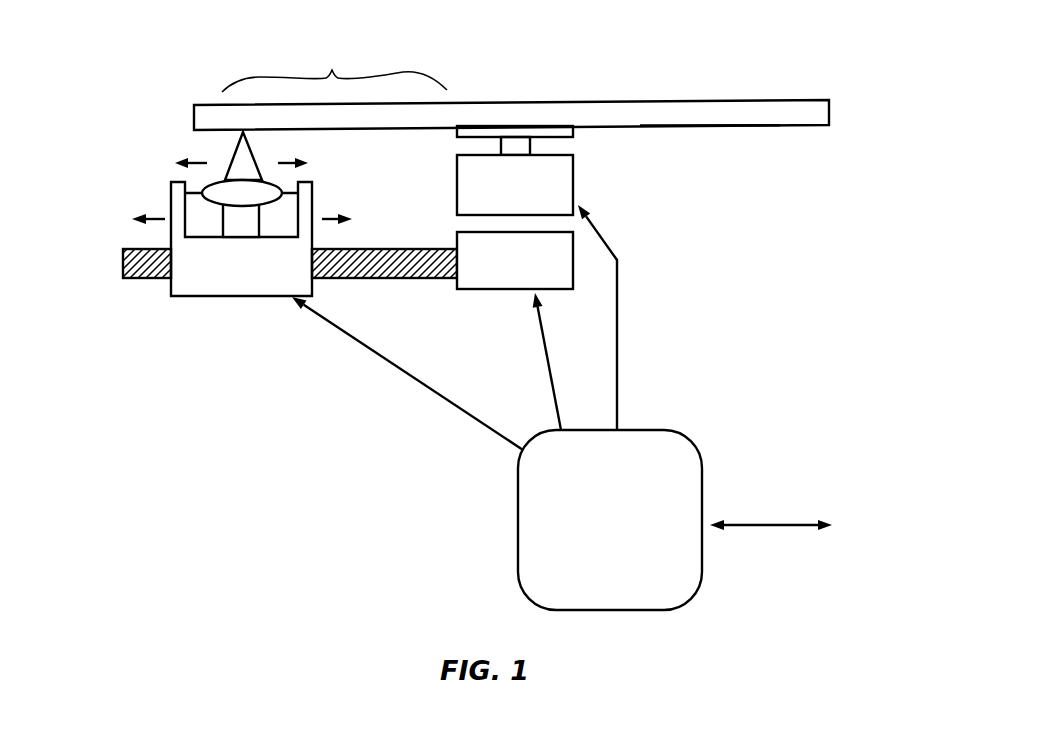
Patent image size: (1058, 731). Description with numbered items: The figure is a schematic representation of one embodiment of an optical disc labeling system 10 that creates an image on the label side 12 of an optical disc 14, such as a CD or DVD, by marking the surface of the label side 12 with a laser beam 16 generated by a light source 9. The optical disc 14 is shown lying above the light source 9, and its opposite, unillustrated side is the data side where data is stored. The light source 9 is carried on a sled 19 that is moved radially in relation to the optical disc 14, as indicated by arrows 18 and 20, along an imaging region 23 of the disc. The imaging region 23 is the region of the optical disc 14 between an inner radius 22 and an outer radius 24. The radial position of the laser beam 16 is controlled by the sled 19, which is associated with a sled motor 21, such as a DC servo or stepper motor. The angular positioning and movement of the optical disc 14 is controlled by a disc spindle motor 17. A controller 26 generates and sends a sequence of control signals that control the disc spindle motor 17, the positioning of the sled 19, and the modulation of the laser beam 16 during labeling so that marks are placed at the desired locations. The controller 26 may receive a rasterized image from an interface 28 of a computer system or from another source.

The light source 9 is at (222, 220).
The optical disc labeling system 10 is at (94, 94).
The label side 12 is at (711, 131).
The optical disc 14 is at (830, 117).
The laser beam 16 is at (232, 153).
The disc spindle motor 17 is at (575, 175).
The arrow 18 is at (202, 163).
The sled 19 is at (170, 297).
The arrow 20 is at (280, 163).
The sled motor 21 is at (485, 289).
The inner radius 22 is at (457, 88).
The imaging region 23 is at (334, 71).
The outer radius 24 is at (209, 92).
The controller 26 is at (695, 443).
The interface 28 is at (772, 526).